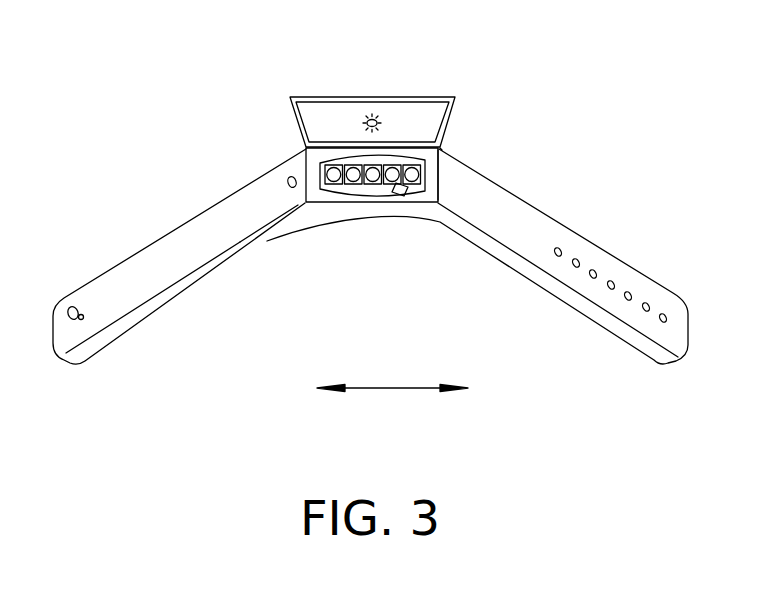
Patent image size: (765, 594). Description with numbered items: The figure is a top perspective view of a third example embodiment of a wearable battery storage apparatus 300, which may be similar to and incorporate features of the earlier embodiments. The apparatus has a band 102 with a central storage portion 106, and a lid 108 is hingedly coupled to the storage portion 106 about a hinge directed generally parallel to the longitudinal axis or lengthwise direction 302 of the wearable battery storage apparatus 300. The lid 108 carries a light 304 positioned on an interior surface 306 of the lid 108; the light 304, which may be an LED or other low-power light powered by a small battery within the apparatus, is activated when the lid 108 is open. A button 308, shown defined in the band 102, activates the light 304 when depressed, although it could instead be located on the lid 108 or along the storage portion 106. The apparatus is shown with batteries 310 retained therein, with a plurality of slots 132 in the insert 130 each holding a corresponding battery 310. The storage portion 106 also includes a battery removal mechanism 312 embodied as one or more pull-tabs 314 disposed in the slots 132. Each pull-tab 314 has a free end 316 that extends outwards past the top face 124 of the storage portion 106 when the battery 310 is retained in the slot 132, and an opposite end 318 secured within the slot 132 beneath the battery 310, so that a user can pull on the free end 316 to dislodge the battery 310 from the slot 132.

The band 102 is at (106, 315).
The storage portion 106 is at (323, 210).
The lid 108 is at (432, 108).
The top face 124 is at (288, 211).
The insert 130 is at (366, 158).
The slots 132 is at (370, 176).
The wearable battery storage apparatus 300 is at (582, 178).
The lengthwise direction 302 is at (393, 388).
The light 304 is at (377, 120).
The interior surface 306 is at (318, 118).
The button 308 is at (288, 178).
The batteries 310 is at (352, 177).
The battery removal mechanism 312 is at (439, 190).
The pull-tab 314 is at (410, 177).
The free end 316 is at (398, 196).
The opposite end 318 is at (439, 148).